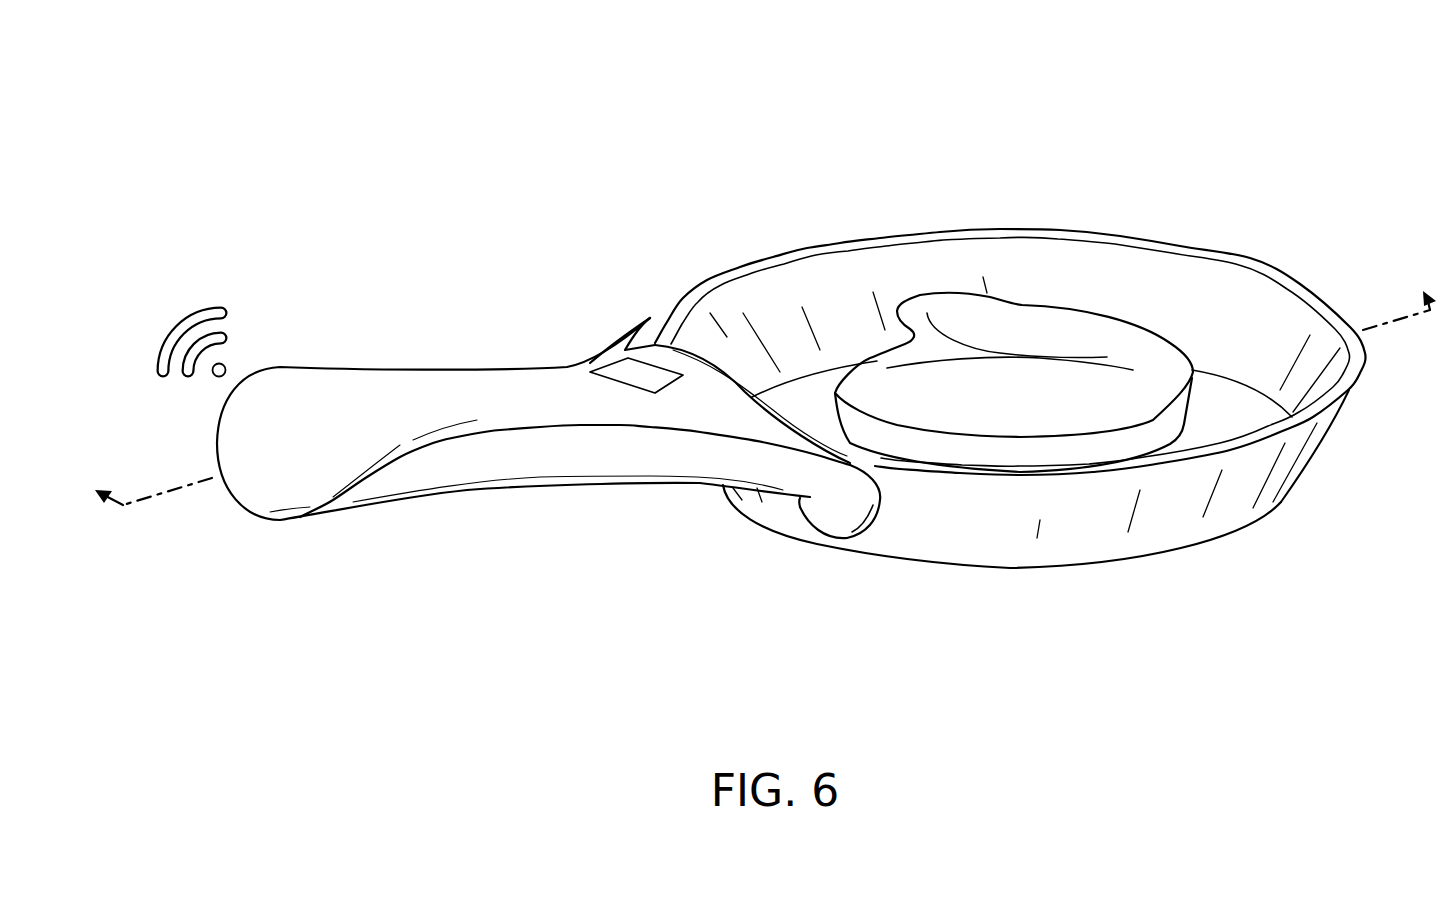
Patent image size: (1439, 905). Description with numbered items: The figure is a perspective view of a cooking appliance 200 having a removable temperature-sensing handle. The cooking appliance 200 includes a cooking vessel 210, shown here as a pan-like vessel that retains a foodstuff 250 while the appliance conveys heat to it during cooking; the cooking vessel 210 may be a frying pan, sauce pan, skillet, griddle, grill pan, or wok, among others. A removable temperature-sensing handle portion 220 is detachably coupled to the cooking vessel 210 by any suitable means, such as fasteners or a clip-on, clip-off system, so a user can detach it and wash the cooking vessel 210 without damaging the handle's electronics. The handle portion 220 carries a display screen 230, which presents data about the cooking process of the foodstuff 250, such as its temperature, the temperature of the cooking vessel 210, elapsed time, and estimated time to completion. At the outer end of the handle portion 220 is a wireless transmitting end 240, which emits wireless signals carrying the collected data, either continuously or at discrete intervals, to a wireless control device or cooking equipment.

The cooking appliance 200 is at (316, 168).
The cooking vessel 210 is at (1000, 569).
The removable temperature-sensing handle portion 220 is at (483, 489).
The display screen 230 is at (615, 362).
The wireless transmitting end 240 is at (283, 368).
The foodstuff 250 is at (1077, 310).